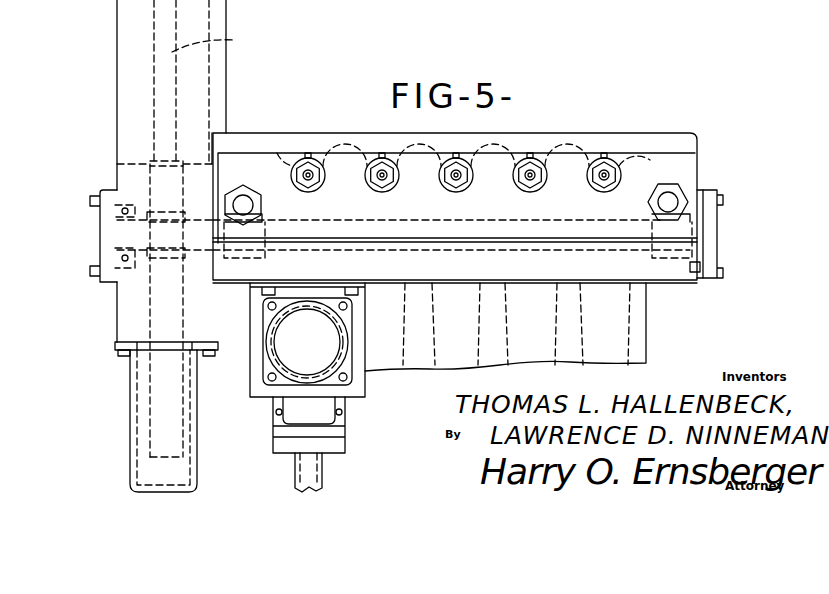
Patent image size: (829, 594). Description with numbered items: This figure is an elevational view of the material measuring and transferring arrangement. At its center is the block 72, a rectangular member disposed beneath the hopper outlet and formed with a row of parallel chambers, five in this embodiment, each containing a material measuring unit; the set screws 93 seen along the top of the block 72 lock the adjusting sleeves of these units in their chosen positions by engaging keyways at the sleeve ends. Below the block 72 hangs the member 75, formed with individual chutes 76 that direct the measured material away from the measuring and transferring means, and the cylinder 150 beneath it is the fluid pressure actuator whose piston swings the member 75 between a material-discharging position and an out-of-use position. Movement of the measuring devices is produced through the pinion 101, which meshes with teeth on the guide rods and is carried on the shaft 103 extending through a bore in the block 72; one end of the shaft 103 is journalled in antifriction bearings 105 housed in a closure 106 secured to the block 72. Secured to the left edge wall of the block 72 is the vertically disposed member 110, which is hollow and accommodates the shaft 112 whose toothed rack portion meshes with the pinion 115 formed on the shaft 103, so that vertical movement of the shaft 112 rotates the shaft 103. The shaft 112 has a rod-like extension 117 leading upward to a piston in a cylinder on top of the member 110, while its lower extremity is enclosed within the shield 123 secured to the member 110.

The block 72 is at (706, 160).
The member 75 is at (655, 335).
The chutes 76 is at (583, 342).
The set screws 93 is at (382, 150).
The pinion 101 is at (263, 258).
The shaft 103 is at (503, 250).
The antifriction bearings 105 is at (717, 212).
The closure 106 is at (717, 250).
The vertically disposed member 110 is at (235, 85).
The shaft 112 is at (150, 375).
The pinion 115 is at (152, 212).
The rod-like extension 117 is at (229, 40).
The shield 123 is at (133, 413).
The cylinder 150 is at (338, 362).